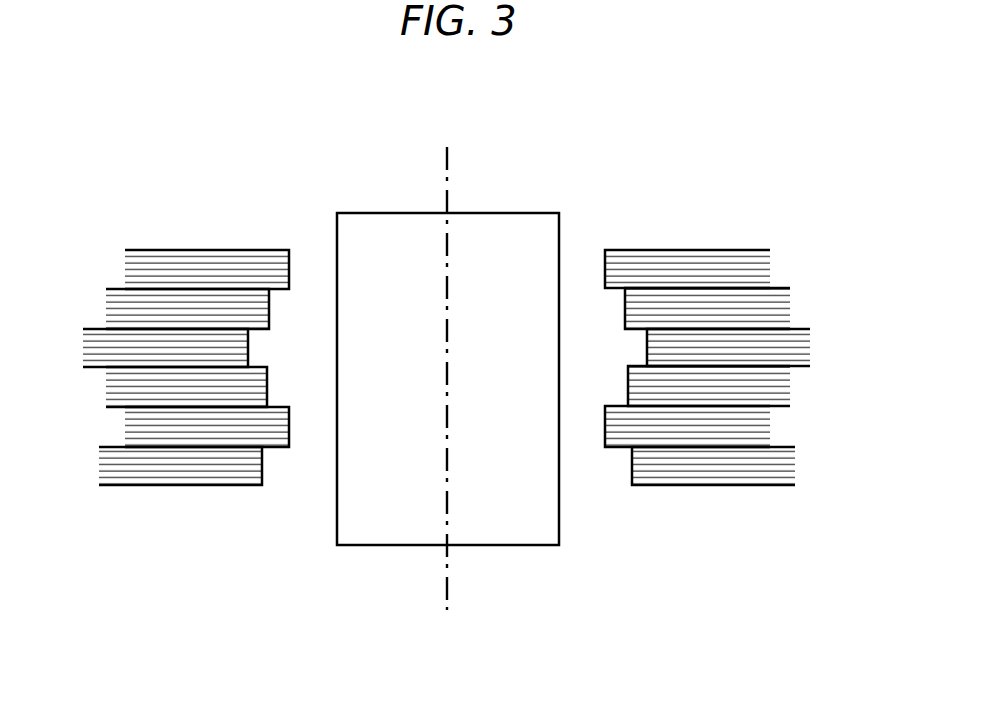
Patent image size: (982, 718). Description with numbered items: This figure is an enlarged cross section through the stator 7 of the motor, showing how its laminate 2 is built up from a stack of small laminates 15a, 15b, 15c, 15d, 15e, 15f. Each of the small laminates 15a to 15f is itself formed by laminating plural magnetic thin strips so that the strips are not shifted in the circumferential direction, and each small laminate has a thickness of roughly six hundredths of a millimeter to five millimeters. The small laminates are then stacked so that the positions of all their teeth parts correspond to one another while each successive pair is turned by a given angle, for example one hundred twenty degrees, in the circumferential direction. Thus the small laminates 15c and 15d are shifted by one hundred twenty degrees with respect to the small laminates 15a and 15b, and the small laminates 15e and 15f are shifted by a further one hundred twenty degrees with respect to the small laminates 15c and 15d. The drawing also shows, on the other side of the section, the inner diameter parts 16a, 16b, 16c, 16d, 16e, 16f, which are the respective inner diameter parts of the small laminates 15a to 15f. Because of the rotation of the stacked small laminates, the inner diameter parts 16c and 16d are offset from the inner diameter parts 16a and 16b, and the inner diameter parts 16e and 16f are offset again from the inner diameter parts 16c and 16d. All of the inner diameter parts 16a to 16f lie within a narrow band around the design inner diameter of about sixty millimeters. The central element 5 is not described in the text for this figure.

The laminate 2 is at (85, 253).
The lens element 5 is at (506, 210).
The stator 7 is at (676, 236).
The small laminate 15a is at (760, 265).
The small laminate 15b is at (773, 315).
The small laminate 15c is at (795, 345).
The small laminate 15d is at (787, 390).
The small laminate 15e is at (762, 433).
The small laminate 15f is at (790, 467).
The inner diameter part 16a is at (288, 265).
The inner diameter part 16b is at (268, 303).
The inner diameter part 16c is at (248, 350).
The inner diameter part 16d is at (267, 385).
The inner diameter part 16e is at (289, 430).
The inner diameter part 16f is at (262, 465).